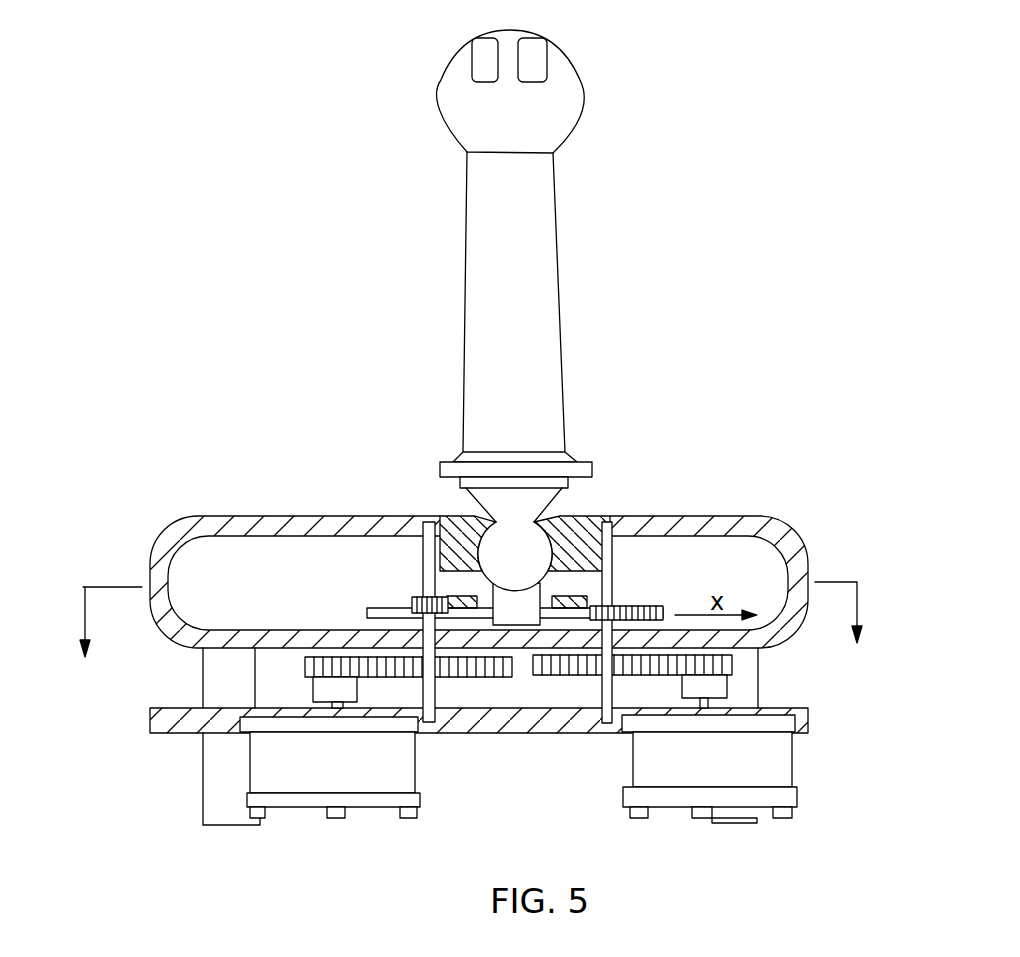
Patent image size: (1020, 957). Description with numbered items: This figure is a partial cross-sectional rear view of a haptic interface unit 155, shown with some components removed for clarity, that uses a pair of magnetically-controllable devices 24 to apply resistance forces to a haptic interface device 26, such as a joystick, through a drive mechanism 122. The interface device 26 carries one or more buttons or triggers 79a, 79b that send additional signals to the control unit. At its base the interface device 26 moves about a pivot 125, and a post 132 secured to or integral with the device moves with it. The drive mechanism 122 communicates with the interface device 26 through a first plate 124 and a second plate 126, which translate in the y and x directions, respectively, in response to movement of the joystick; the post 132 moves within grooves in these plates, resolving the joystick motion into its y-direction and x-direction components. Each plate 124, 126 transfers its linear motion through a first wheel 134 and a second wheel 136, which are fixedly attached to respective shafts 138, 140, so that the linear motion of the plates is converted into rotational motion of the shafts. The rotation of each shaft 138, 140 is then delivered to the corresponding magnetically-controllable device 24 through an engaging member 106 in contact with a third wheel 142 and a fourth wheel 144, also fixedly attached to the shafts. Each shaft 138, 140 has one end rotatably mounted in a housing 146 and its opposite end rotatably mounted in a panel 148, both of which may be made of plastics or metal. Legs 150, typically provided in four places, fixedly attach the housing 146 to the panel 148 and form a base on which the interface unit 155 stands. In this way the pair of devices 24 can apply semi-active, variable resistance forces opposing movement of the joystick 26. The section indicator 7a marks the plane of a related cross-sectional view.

The haptic interface device 26 is at (476, 231).
The button 79a is at (483, 55).
The button 79b is at (533, 57).
The haptic interface unit 155 is at (664, 172).
The pivot 125 is at (511, 552).
The drive mechanism 122 is at (358, 588).
The first plate 124 is at (575, 593).
The second plate 126 is at (367, 614).
The post 132 is at (470, 557).
The first wheel 134 is at (417, 597).
The second wheel 136 is at (625, 607).
The shaft 138 is at (425, 524).
The shaft 140 is at (604, 525).
The housing 146 is at (163, 543).
The engaging member 106 is at (330, 691).
The panel 148 is at (180, 722).
The legs 150 is at (218, 777).
The third wheel 142 is at (496, 678).
The fourth wheel 144 is at (572, 677).
The magnetically-controllable device 24 is at (310, 773).
The section line 7a- 7a is at (472, 627).